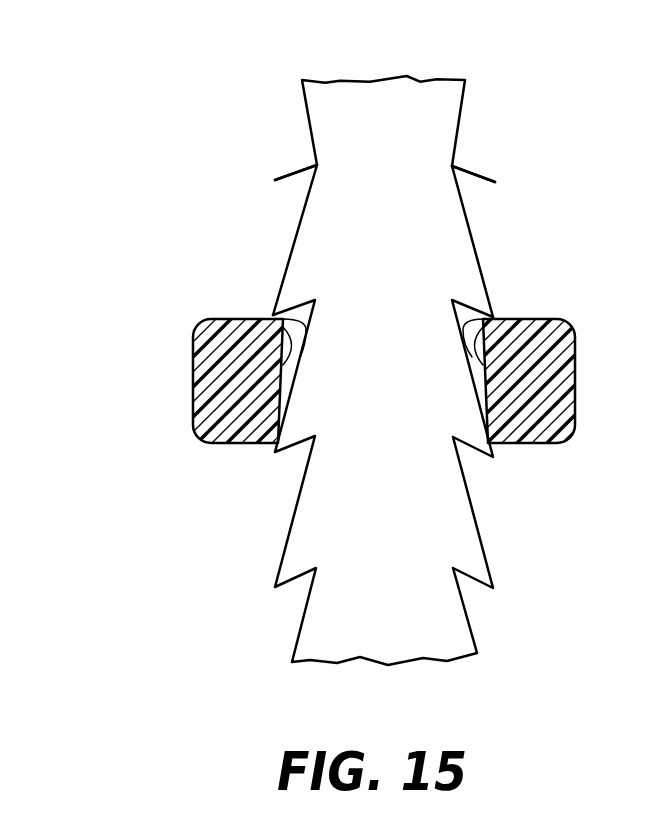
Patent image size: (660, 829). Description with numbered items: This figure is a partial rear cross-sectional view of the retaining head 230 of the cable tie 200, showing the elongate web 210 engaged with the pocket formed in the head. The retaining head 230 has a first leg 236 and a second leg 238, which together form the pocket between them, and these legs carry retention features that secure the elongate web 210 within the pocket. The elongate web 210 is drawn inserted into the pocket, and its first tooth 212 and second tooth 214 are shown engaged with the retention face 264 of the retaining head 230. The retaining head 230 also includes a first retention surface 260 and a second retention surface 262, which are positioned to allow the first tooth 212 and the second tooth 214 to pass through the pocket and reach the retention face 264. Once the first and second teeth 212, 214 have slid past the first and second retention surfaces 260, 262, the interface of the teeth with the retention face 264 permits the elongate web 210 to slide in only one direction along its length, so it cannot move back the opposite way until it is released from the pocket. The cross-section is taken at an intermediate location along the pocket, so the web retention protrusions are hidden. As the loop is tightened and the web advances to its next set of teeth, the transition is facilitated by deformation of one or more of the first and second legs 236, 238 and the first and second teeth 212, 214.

The cable tie 200 is at (573, 158).
The elongate web 210 is at (363, 500).
The first tooth 212 is at (476, 248).
The second tooth 214 is at (297, 232).
The retaining head 230 is at (577, 352).
The first leg 236 is at (560, 398).
The second leg 238 is at (207, 383).
The first retention surface 260 is at (515, 319).
The second retention surface 262 is at (256, 323).
The retention face 264 is at (235, 319).